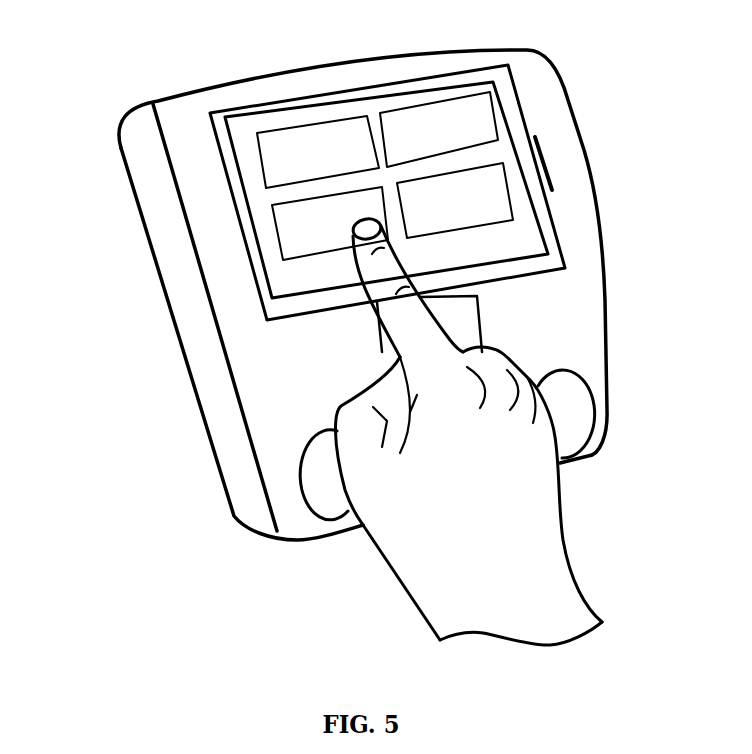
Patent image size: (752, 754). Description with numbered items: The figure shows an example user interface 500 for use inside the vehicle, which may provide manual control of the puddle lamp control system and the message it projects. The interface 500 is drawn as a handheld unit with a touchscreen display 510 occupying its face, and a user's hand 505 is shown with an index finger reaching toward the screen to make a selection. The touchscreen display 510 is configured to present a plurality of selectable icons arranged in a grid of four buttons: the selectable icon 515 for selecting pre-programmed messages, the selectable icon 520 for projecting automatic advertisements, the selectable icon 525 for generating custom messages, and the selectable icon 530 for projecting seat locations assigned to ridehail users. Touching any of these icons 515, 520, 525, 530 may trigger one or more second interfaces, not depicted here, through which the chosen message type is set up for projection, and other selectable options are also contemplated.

The user interface 500 is at (232, 107).
The user's hand 505 is at (602, 618).
The touchscreen display 510 is at (282, 283).
The selectable icon 515 is at (257, 162).
The selectable icon 520 is at (497, 117).
The selectable icon 525 is at (278, 237).
The selectable icon 530 is at (510, 192).